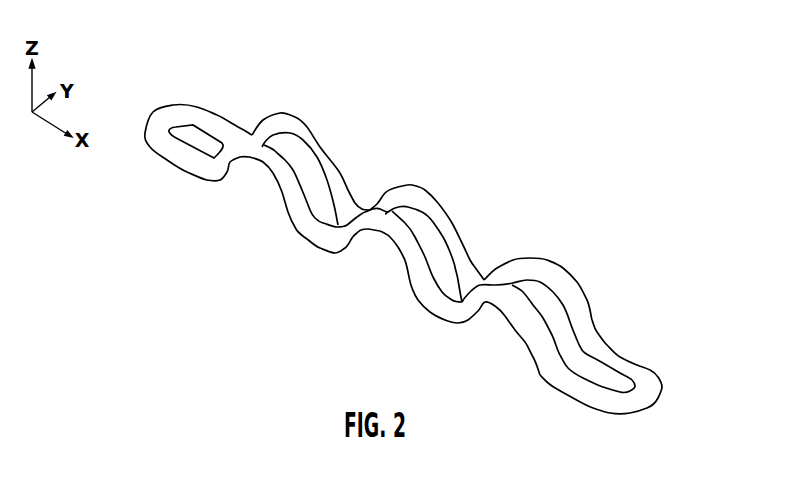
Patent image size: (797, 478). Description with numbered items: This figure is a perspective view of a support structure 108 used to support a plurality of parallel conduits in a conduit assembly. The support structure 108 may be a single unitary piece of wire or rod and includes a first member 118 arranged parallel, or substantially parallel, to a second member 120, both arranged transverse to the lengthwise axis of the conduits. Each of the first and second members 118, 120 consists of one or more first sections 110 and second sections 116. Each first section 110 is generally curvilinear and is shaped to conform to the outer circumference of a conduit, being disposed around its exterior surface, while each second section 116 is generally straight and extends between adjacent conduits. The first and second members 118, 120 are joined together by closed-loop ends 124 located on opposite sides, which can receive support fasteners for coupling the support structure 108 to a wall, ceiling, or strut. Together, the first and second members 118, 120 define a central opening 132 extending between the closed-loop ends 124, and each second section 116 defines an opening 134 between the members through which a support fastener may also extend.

The support structure 108 is at (467, 105).
The first section 110 is at (300, 130).
The second section 116 is at (317, 232).
The first member 118 is at (388, 266).
The second member 120 is at (447, 196).
The closed-loop end 124 is at (171, 117).
The central opening 132 is at (570, 350).
The opening 134 is at (456, 277).